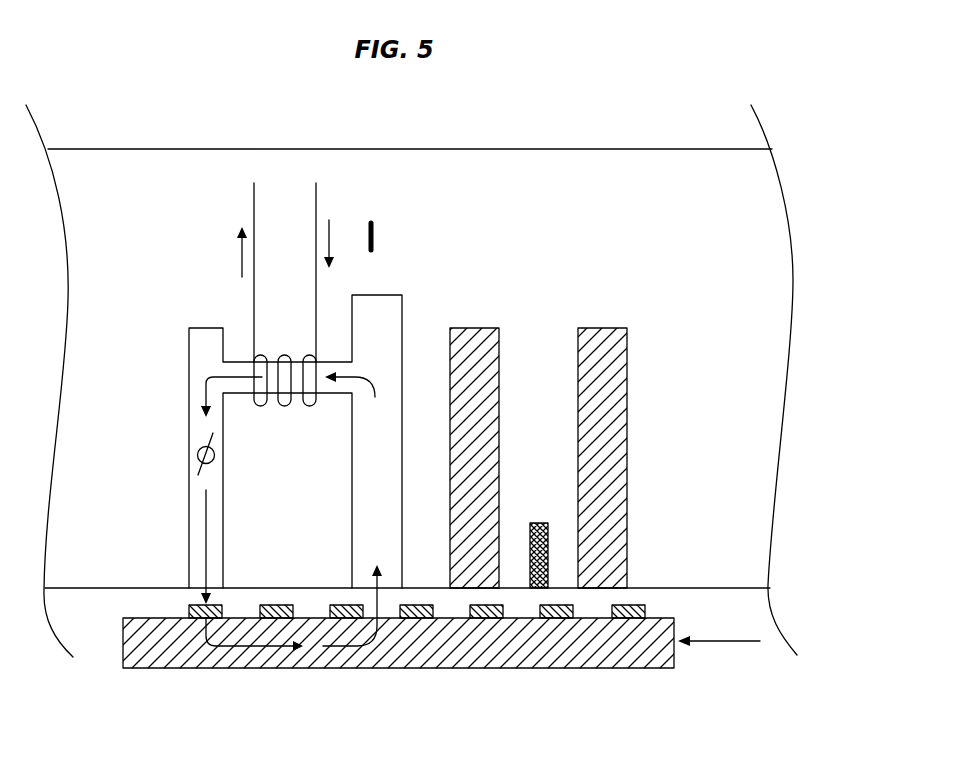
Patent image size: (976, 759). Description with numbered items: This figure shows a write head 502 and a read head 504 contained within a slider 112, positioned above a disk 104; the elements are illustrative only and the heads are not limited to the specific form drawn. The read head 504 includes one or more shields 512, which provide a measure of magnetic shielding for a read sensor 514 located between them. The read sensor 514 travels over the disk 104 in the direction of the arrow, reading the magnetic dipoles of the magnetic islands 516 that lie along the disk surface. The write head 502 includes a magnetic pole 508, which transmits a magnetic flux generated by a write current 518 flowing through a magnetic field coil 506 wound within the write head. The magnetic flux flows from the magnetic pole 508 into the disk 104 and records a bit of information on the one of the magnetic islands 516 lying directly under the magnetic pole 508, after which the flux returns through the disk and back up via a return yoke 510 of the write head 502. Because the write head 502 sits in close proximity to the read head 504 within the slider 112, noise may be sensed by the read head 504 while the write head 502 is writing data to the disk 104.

The slider 112 is at (127, 80).
The disk 104 is at (574, 688).
The write head 502 is at (178, 267).
The read head 504 is at (535, 293).
The magnetic field coil 506 is at (267, 355).
The magnetic pole 508 is at (189, 532).
The return yoke 510 is at (352, 500).
The shields 512 is at (578, 417).
The read sensor 514 is at (542, 523).
The magnetic islands 516 is at (277, 604).
The write current 518 is at (329, 233).